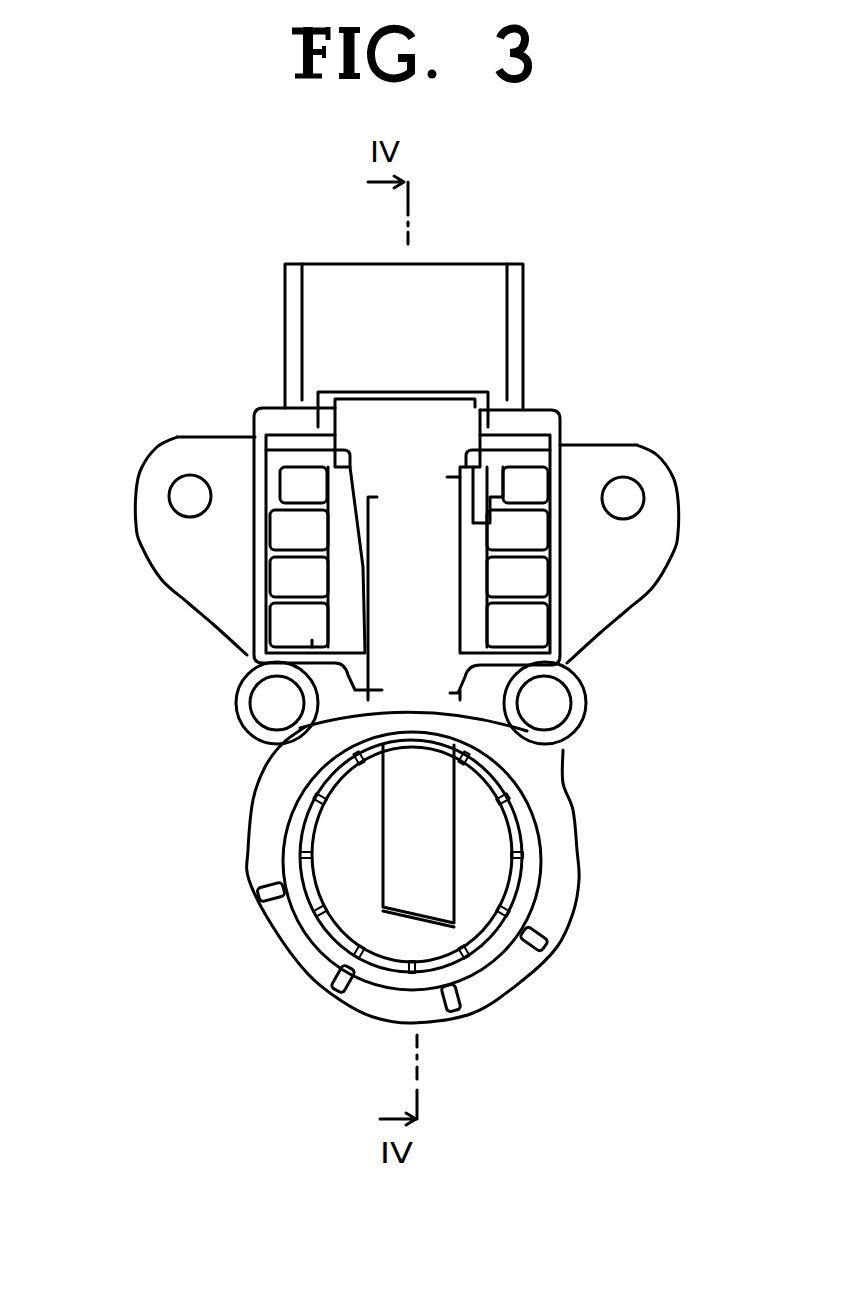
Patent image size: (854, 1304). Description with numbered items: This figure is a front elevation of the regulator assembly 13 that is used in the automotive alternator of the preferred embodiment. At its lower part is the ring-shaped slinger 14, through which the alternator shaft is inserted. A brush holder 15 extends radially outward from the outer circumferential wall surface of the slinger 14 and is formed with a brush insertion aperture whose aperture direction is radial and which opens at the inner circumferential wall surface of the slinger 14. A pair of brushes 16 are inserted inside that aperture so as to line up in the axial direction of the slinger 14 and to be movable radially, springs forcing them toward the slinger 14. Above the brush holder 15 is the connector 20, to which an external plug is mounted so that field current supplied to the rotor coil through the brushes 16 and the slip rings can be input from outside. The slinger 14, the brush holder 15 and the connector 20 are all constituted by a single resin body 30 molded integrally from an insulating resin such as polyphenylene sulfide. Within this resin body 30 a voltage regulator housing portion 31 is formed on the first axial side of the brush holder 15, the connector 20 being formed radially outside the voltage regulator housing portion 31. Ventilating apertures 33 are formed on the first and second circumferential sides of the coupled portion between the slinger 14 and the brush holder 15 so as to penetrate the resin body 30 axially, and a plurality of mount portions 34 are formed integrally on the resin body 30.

The regulator assembly 13 is at (164, 270).
The slinger 14 is at (567, 835).
The brush holder 15 is at (445, 565).
The brushes 16 is at (443, 858).
The connector 20 is at (527, 302).
The resin body 30 is at (557, 407).
The voltage regulator housing portion 31 is at (262, 458).
The ventilating apertures 33 is at (258, 660).
The mount portions 34 is at (133, 478).